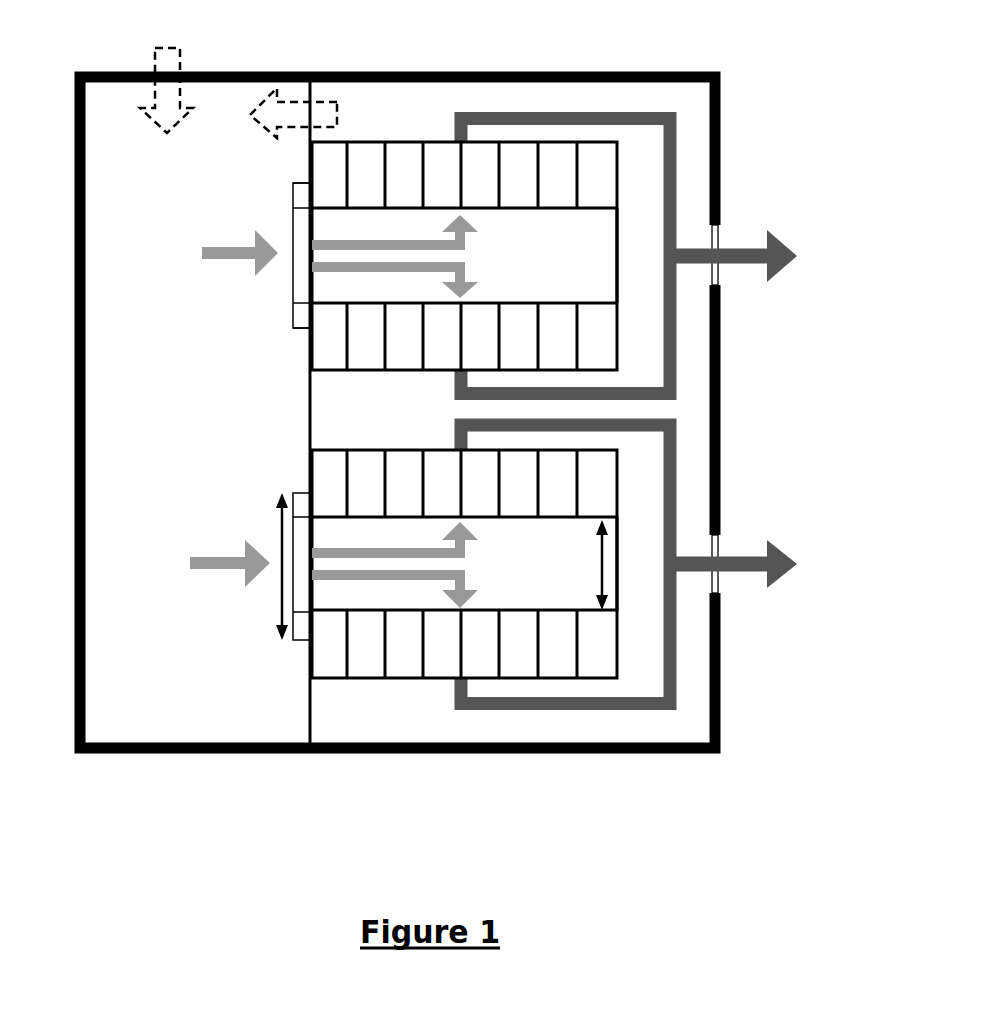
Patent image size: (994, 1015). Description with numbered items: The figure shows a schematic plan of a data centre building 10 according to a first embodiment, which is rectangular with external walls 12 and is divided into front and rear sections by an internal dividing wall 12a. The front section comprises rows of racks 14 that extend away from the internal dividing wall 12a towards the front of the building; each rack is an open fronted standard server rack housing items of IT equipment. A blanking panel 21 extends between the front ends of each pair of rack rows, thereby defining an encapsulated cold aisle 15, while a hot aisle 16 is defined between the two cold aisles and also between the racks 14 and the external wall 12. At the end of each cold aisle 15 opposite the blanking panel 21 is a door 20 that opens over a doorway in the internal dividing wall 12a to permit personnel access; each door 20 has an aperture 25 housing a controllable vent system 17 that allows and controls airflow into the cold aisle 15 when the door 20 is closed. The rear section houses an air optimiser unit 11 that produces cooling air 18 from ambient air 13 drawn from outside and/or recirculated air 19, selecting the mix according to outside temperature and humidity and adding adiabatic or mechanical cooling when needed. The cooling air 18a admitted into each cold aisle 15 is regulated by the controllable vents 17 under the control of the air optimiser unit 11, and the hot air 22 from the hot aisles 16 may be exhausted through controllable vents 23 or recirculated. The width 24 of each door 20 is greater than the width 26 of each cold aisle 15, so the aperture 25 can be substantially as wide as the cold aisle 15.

The data centre building 10 is at (180, 790).
The air optimiser unit 11 is at (162, 424).
The external walls 12 is at (640, 752).
The internal dividing wall 12a is at (308, 708).
The ambient air 13 is at (160, 73).
The racks 14 is at (375, 347).
The cold aisle 15 is at (598, 299).
The hot aisle 16 is at (412, 131).
The controllable vent system 17 is at (303, 283).
The cooling air 18 is at (213, 250).
The cooling air admitted into cold aisle 18a is at (460, 272).
The recirculated air 19 is at (290, 108).
The door 20 is at (307, 325).
The blanking panel 21 is at (642, 244).
The hot air 22 is at (545, 110).
The controllable vents 23 is at (720, 232).
The width of door 24 is at (277, 538).
The aperture 25 is at (298, 232).
The width of cold aisle 26 is at (603, 565).